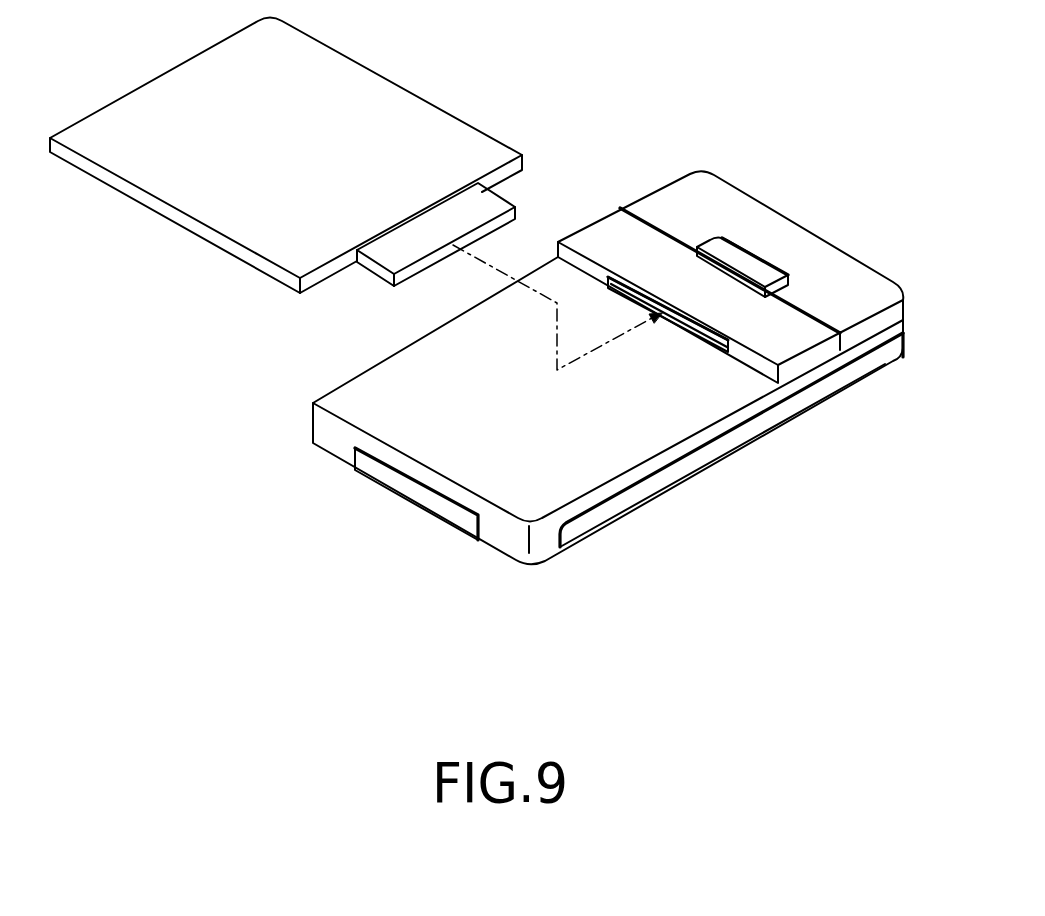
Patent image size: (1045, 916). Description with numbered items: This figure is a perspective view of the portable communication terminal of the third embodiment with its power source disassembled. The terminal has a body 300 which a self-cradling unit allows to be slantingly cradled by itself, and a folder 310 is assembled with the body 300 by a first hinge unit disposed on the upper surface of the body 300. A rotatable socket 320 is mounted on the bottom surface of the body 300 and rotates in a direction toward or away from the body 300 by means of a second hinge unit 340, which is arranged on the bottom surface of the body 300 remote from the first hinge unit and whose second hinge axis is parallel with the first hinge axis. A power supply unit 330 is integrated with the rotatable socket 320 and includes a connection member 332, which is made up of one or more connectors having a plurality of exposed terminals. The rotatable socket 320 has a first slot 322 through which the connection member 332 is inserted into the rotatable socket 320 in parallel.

The body 300 is at (372, 531).
The folder 310 is at (813, 393).
The rotatable socket 320 is at (647, 237).
The first slot 322 is at (702, 333).
The power supply unit 330 is at (356, 106).
The connection member 332 is at (495, 205).
The second hinge unit 340 is at (743, 263).